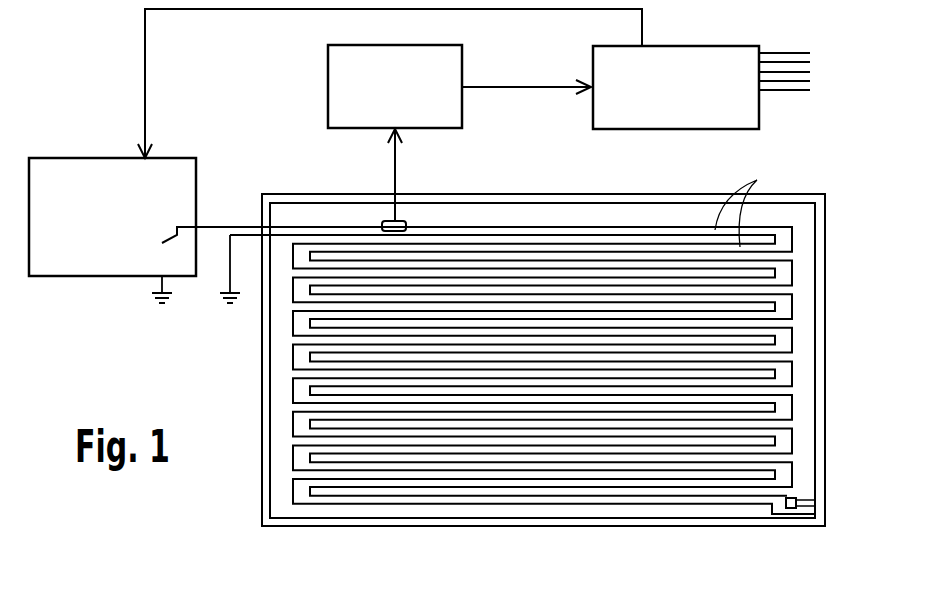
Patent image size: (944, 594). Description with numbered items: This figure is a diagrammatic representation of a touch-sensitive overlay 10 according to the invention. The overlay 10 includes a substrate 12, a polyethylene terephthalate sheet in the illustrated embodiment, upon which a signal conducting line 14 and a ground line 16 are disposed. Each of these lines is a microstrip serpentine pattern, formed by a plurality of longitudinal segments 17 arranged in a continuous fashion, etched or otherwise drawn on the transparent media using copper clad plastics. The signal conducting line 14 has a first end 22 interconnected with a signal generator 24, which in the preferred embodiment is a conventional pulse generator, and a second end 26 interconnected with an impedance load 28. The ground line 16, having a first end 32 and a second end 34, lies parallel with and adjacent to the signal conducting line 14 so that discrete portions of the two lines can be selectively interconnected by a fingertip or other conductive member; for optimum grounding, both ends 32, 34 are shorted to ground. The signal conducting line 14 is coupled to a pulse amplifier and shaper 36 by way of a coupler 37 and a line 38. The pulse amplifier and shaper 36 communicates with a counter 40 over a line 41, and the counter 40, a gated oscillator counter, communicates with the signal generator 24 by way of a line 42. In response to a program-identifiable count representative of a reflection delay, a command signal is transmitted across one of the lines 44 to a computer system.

The touch-sensitive overlay 10 is at (228, 538).
The substrate 12 is at (263, 450).
The signal conducting line 14 is at (540, 225).
The ground line 16 is at (597, 240).
The longitudinal segments 17 is at (754, 207).
The first end 22 is at (250, 211).
The signal generator 24 is at (88, 268).
The second end 26 is at (808, 496).
The impedance load 28 is at (798, 502).
The first end 32 is at (256, 256).
The second end 34 is at (815, 514).
The pulse amplifier and shaper 36 is at (457, 113).
The coupler 37 is at (420, 195).
The line 38 is at (392, 167).
The counter 40 is at (683, 44).
The line 41 is at (518, 88).
The line 42 is at (488, 12).
The lines 44 is at (775, 73).